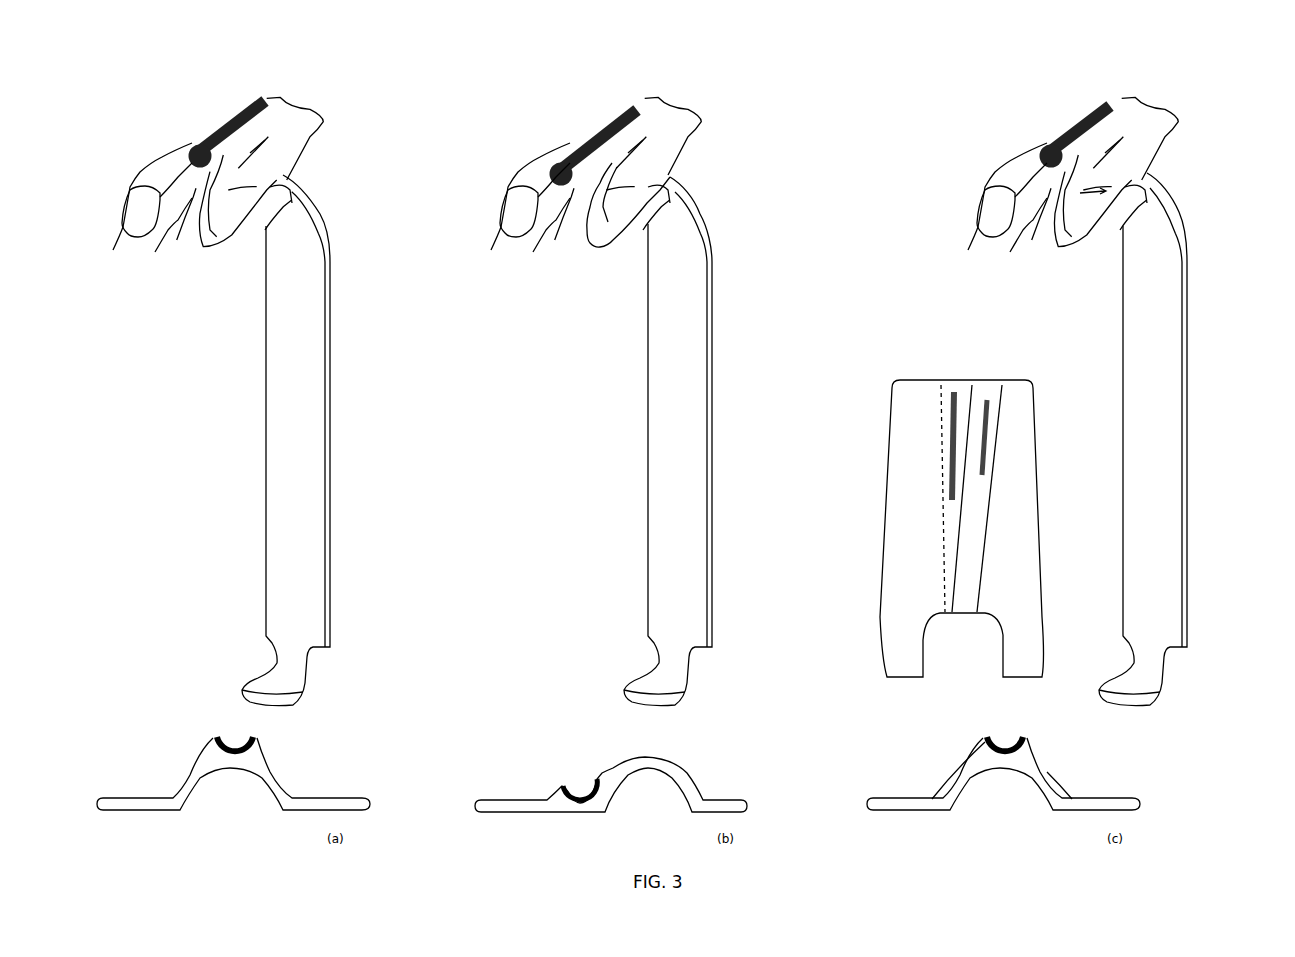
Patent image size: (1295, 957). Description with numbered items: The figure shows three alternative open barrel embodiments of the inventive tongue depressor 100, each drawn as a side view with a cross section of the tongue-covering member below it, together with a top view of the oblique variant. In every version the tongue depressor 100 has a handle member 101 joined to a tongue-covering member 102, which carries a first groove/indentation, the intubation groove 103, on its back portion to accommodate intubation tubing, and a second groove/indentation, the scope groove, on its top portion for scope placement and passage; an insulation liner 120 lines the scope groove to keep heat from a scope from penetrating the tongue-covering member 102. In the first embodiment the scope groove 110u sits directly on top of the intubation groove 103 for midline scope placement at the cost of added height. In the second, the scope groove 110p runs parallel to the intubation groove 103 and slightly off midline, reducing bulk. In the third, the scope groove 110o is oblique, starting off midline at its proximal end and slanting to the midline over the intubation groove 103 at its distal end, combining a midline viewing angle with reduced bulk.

The tongue depressor 100 is at (360, 182).
The handle member 101 is at (312, 368).
The tongue-covering member 102 is at (127, 240).
The first groove/indentation (intubation groove) 103 is at (168, 258).
The second groove/indentation (scope groove), top alignment 110u is at (268, 95).
The second groove/indentation (scope groove), parallel alignment 110p is at (640, 110).
The second groove/indentation (scope groove), oblique alignment 110o is at (1110, 100).
The insulation liner 120 is at (213, 135).